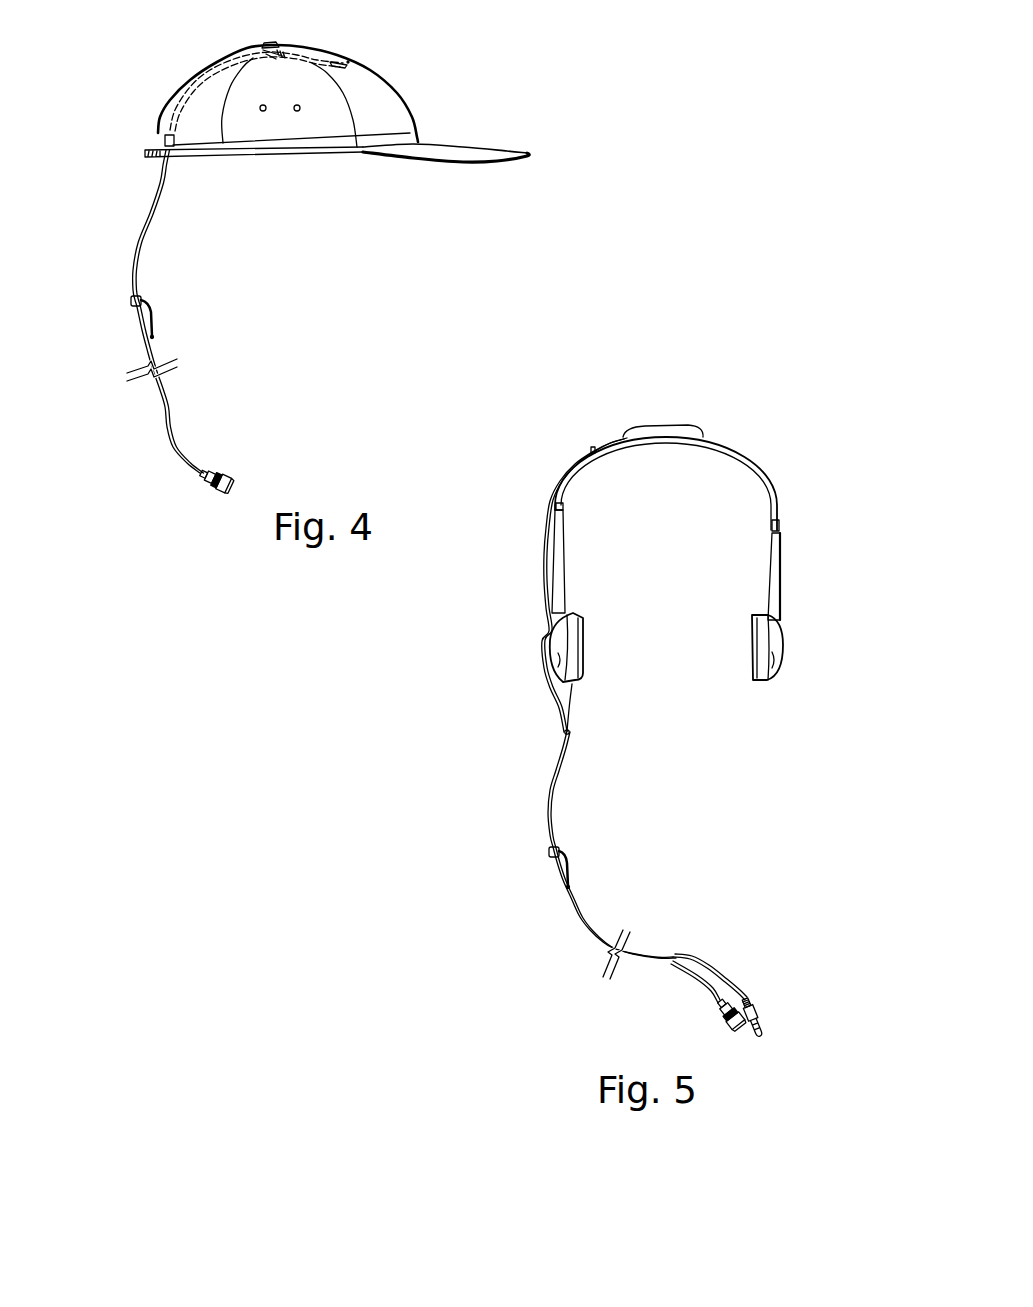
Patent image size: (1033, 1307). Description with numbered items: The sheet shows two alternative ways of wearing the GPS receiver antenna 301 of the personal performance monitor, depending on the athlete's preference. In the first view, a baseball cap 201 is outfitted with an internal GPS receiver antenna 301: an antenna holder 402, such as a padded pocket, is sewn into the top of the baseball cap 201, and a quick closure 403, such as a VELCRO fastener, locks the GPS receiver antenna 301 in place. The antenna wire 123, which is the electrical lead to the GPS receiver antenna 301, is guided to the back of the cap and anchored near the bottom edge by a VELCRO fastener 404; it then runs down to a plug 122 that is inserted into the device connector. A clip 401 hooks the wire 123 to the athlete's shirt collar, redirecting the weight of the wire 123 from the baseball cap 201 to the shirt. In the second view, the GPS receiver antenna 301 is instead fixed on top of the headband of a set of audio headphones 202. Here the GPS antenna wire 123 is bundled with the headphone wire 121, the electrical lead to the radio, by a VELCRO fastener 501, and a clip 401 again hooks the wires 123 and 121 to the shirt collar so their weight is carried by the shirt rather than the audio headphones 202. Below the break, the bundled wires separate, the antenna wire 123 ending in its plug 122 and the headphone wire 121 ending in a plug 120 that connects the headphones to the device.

In FIG. 5, the plug 120 is at (753, 1010).
In FIG. 5, the headphone wire 121 is at (693, 960).
In FIG. 4, the plug 122 is at (207, 483).
In FIG. 5, the plug 122 is at (723, 1027).
In FIG. 4, the antenna wire 123 is at (167, 422).
In FIG. 5, the antenna wire 123 is at (693, 977).
In FIG. 4, the baseball cap 201 is at (250, 147).
In FIG. 5, the set of audio headphones 202 is at (777, 567).
In FIG. 4, the GPS receiver antenna 301 is at (313, 55).
In FIG. 5, the GPS receiver antenna 301 is at (690, 423).
In FIG. 4, the clip 401 is at (153, 308).
In FIG. 5, the clip 401 is at (560, 851).
In FIG. 4, the antenna holder 402 is at (340, 62).
In FIG. 4, the quick closure 403 is at (247, 48).
In FIG. 4, the VELCRO fastener 404 is at (163, 137).
In FIG. 5, the VELCRO fastener 501 is at (563, 730).